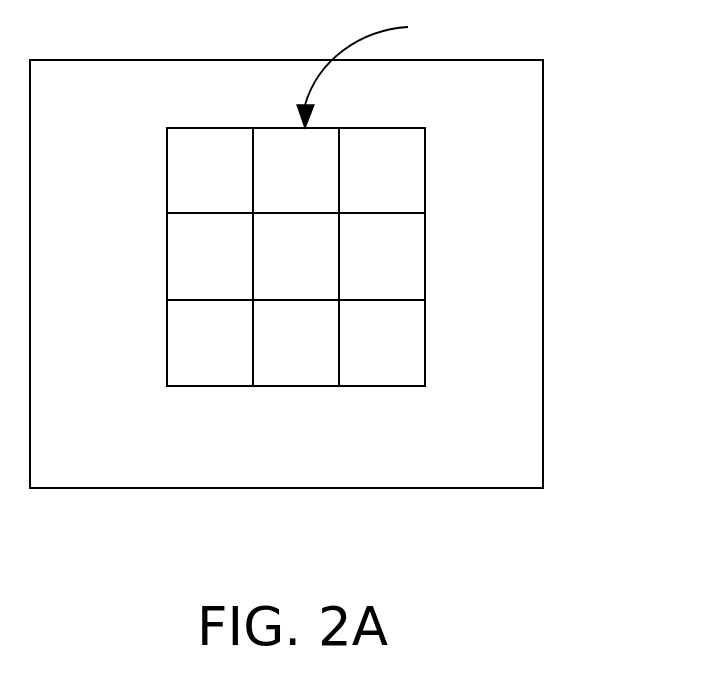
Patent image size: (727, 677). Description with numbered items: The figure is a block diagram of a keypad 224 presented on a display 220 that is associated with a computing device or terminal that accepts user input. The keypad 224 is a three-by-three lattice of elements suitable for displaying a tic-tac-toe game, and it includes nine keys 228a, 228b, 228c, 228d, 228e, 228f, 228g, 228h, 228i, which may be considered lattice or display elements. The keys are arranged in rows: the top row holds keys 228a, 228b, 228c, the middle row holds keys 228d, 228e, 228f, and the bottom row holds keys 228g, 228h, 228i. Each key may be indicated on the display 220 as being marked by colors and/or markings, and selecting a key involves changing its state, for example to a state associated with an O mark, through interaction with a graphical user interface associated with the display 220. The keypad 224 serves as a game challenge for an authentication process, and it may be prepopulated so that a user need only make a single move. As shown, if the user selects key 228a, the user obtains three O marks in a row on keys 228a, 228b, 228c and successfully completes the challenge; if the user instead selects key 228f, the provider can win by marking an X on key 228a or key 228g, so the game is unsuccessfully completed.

The display 220 is at (543, 270).
The keypad 224 is at (381, 70).
The key 228a is at (203, 128).
The key 228b is at (271, 128).
The key 228c is at (380, 128).
The key 228d is at (167, 270).
The key 228e is at (272, 243).
The key 228f is at (425, 253).
The key 228g is at (167, 342).
The key 228h is at (298, 387).
The key 228i is at (425, 345).